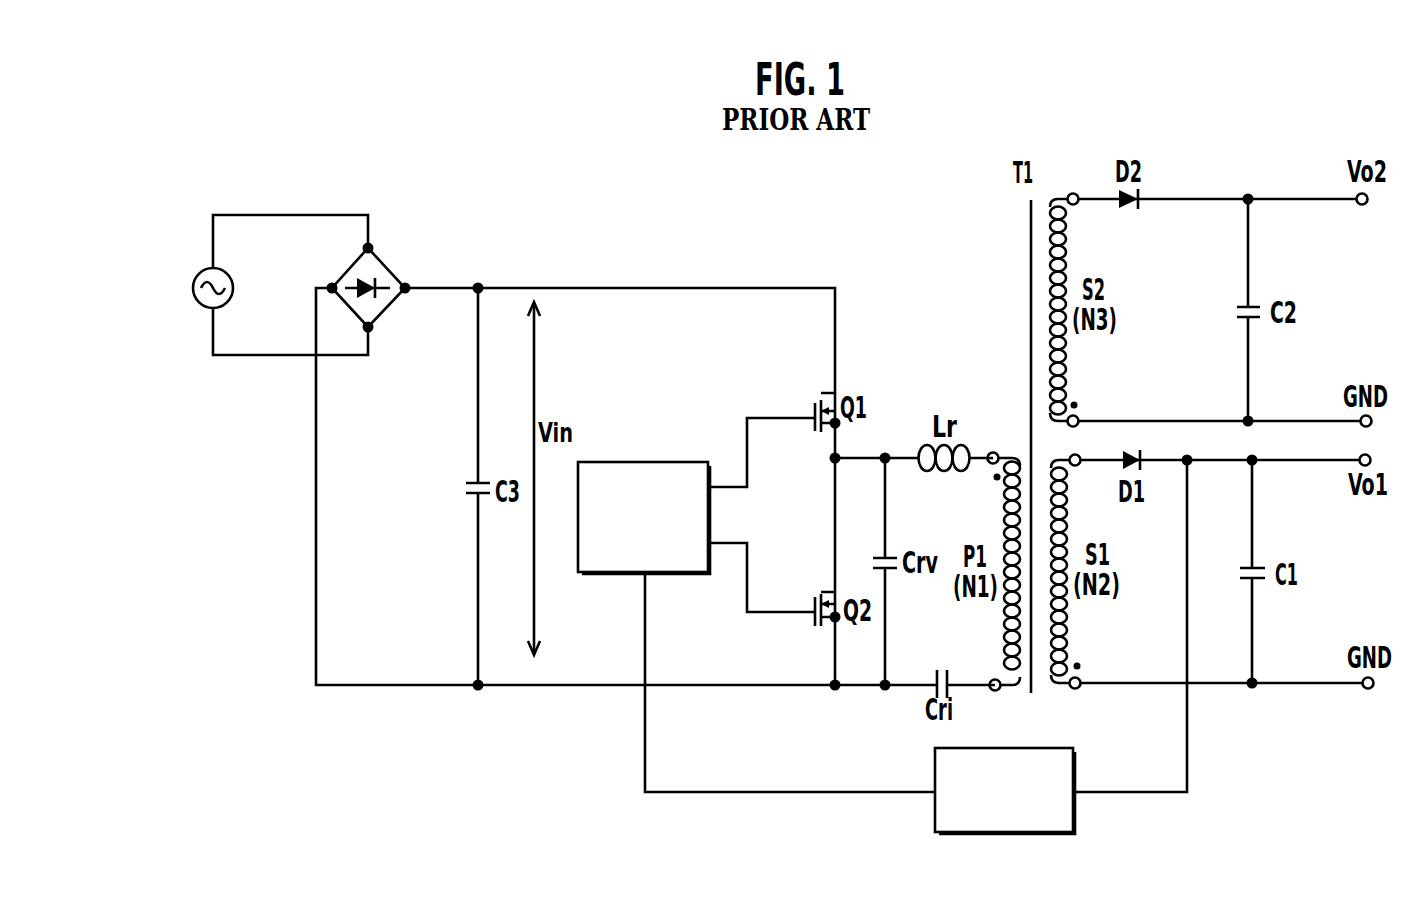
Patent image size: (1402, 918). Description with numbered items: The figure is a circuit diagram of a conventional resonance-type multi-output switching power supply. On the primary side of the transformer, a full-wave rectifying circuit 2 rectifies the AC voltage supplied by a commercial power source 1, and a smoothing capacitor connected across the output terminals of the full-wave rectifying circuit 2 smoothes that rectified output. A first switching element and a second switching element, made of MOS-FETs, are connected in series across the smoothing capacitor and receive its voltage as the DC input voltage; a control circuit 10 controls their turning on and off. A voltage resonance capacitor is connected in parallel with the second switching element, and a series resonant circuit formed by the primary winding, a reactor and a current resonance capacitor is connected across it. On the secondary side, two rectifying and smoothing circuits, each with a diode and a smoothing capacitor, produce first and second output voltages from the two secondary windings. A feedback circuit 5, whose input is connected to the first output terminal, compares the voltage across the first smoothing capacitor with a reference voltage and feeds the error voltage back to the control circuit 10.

The commercial power source 1 is at (193, 288).
The full-wave rectifying circuit 2 is at (387, 265).
The control circuit 10 is at (640, 462).
The feedback circuit 5 is at (1075, 808).